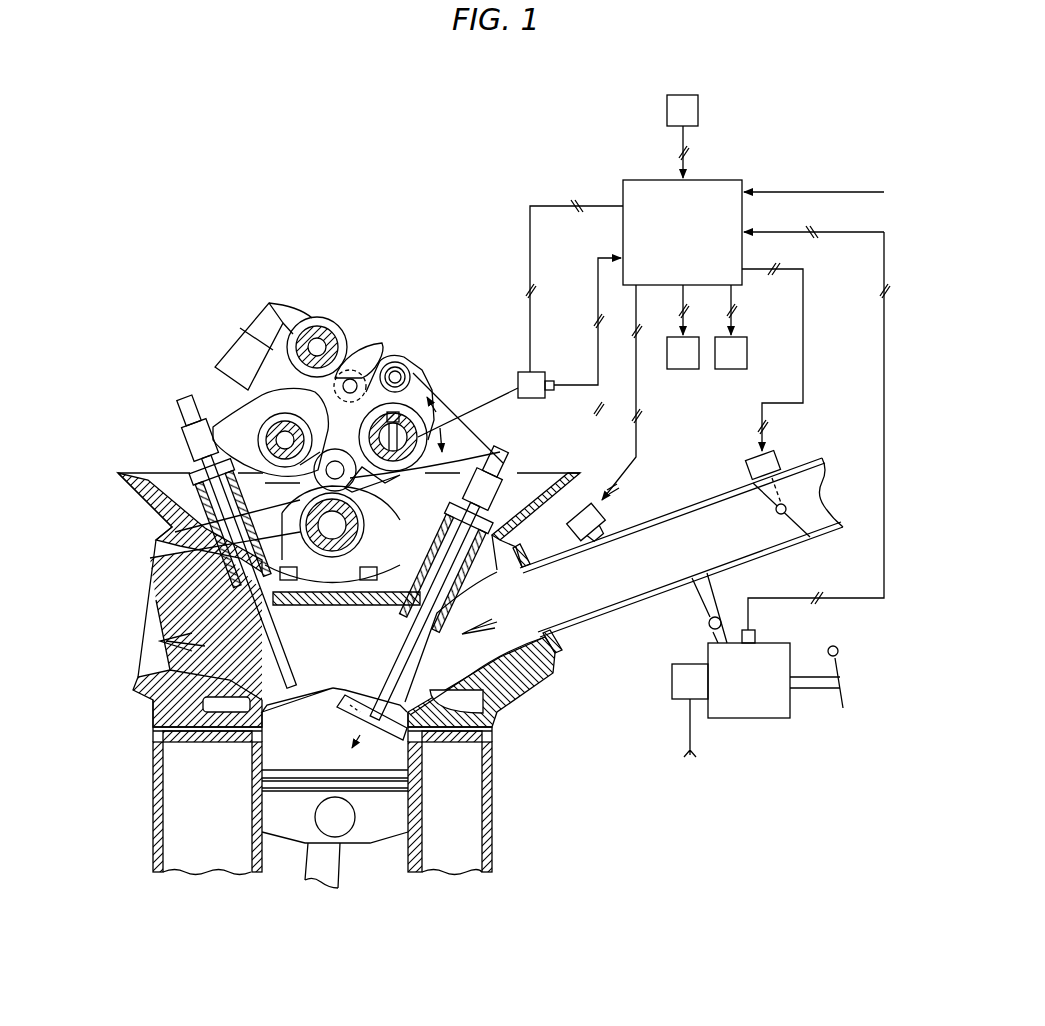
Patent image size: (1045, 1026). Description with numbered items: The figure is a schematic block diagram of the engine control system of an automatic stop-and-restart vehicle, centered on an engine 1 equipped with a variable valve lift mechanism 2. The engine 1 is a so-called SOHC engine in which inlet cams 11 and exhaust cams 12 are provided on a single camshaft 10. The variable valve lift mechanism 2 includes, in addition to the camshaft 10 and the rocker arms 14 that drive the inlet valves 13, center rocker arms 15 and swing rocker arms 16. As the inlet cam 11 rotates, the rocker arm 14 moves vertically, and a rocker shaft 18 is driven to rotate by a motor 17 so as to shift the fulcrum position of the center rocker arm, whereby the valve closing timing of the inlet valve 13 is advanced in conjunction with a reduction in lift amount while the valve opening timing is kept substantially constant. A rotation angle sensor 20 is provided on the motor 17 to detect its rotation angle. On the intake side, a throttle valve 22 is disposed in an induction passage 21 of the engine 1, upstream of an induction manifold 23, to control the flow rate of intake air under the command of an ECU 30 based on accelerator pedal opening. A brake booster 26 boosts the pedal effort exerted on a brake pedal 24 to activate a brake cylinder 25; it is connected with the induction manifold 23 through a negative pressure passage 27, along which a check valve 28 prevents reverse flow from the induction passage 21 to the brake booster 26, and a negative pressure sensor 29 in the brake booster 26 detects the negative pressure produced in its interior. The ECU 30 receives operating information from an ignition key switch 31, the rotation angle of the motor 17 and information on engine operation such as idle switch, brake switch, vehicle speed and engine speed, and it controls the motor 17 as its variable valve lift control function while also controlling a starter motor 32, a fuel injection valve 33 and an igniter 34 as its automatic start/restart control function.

The engine 1 is at (137, 793).
The variable valve lift mechanism 2 is at (380, 296).
The camshaft 10 is at (332, 532).
The inlet cam 11 is at (170, 562).
The exhaust cam 12 is at (175, 532).
The inlet valve 13 is at (412, 646).
The rocker arm 14 is at (440, 400).
The center rocker arm 15 is at (362, 486).
The swing rocker arm 16 is at (370, 352).
The motor 17 is at (520, 372).
The rocker shaft 18 is at (418, 402).
The rotation angle sensor 20 is at (552, 392).
The induction passage 21 is at (706, 492).
The throttle valve 22 is at (770, 455).
The induction manifold 23 is at (597, 628).
The brake pedal 24 is at (845, 693).
The brake cylinder 25 is at (675, 699).
The brake booster 26 is at (770, 718).
The negative pressure passage 27 is at (695, 597).
The check valve 28 is at (707, 625).
The negative pressure sensor 29 is at (757, 636).
The ECU 30 is at (620, 186).
The ignition key switch 31 is at (667, 110).
The starter motor 32 is at (684, 369).
The fuel injection valve 33 is at (600, 500).
The igniter 34 is at (733, 369).